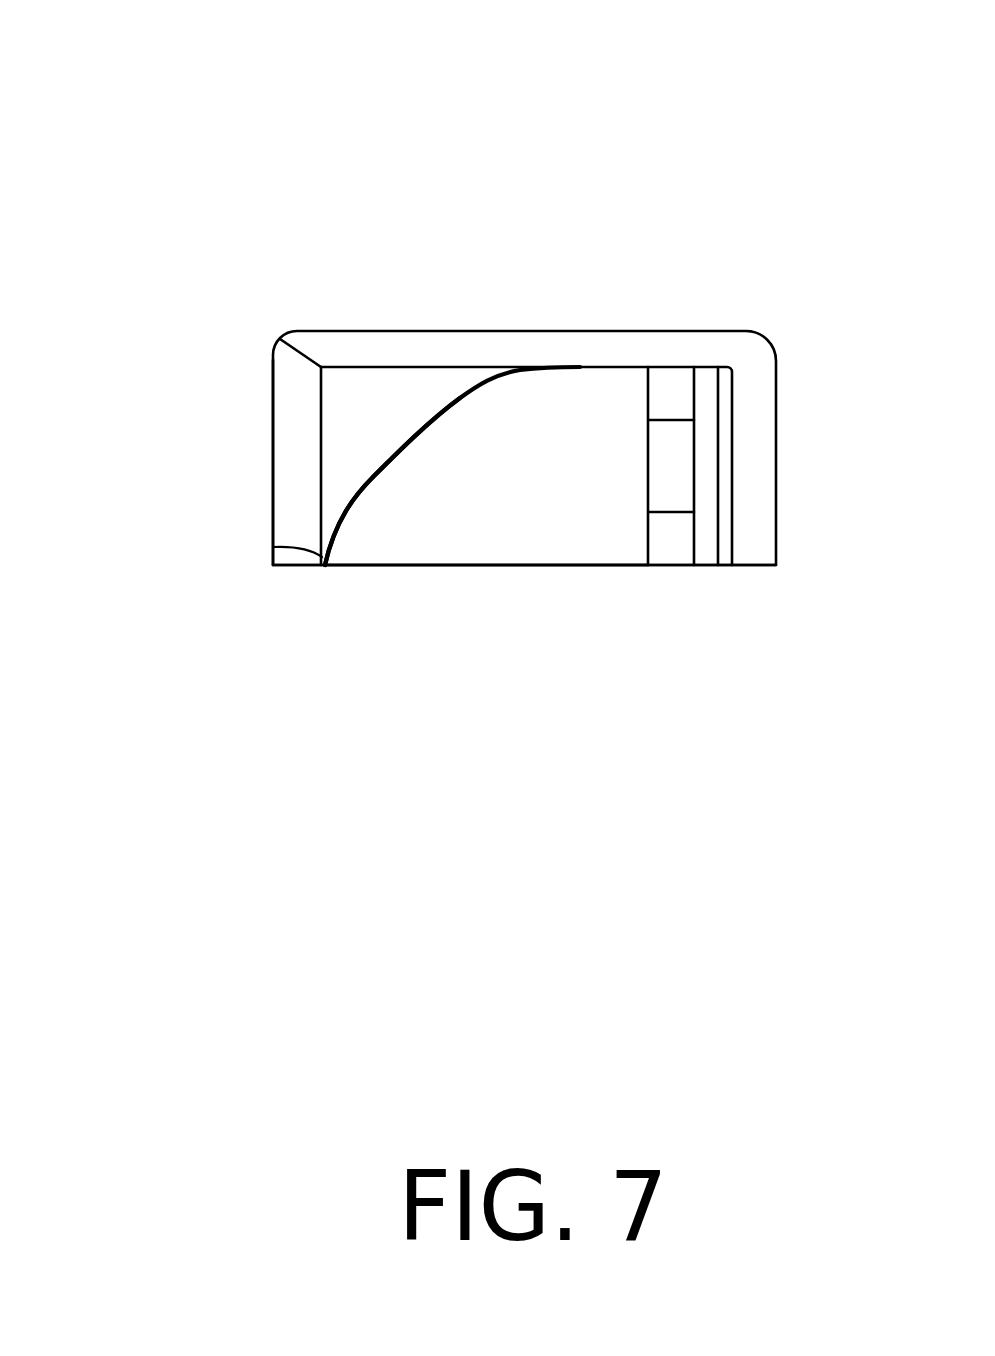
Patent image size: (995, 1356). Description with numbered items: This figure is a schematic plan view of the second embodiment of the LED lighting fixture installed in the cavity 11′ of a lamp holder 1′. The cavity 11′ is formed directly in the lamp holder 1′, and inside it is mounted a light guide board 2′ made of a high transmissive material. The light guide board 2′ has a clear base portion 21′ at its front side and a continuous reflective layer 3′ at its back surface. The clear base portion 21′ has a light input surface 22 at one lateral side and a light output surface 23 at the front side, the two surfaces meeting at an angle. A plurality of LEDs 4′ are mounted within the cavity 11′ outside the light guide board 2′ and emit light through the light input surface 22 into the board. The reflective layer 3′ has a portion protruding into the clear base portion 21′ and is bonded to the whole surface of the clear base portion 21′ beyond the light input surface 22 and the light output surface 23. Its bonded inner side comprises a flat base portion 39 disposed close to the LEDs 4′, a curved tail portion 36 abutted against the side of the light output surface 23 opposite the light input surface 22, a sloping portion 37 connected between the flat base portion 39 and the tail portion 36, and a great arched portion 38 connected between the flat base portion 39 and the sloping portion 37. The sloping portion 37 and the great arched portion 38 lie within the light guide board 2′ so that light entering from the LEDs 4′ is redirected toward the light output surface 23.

The lamp holder 1′ is at (772, 337).
The light guide board 2′ is at (320, 465).
The reflective layer 3′ is at (433, 417).
The LEDs 4′ is at (673, 477).
The cavity 11′ is at (280, 338).
The clear base portion 21′ is at (503, 497).
The light input surface 22 is at (650, 467).
The light output surface 23 is at (583, 565).
The curved tail portion 36 is at (273, 547).
The sloping portion 37 is at (373, 477).
The great arched portion 38 is at (507, 370).
The flat base portion 39 is at (612, 365).